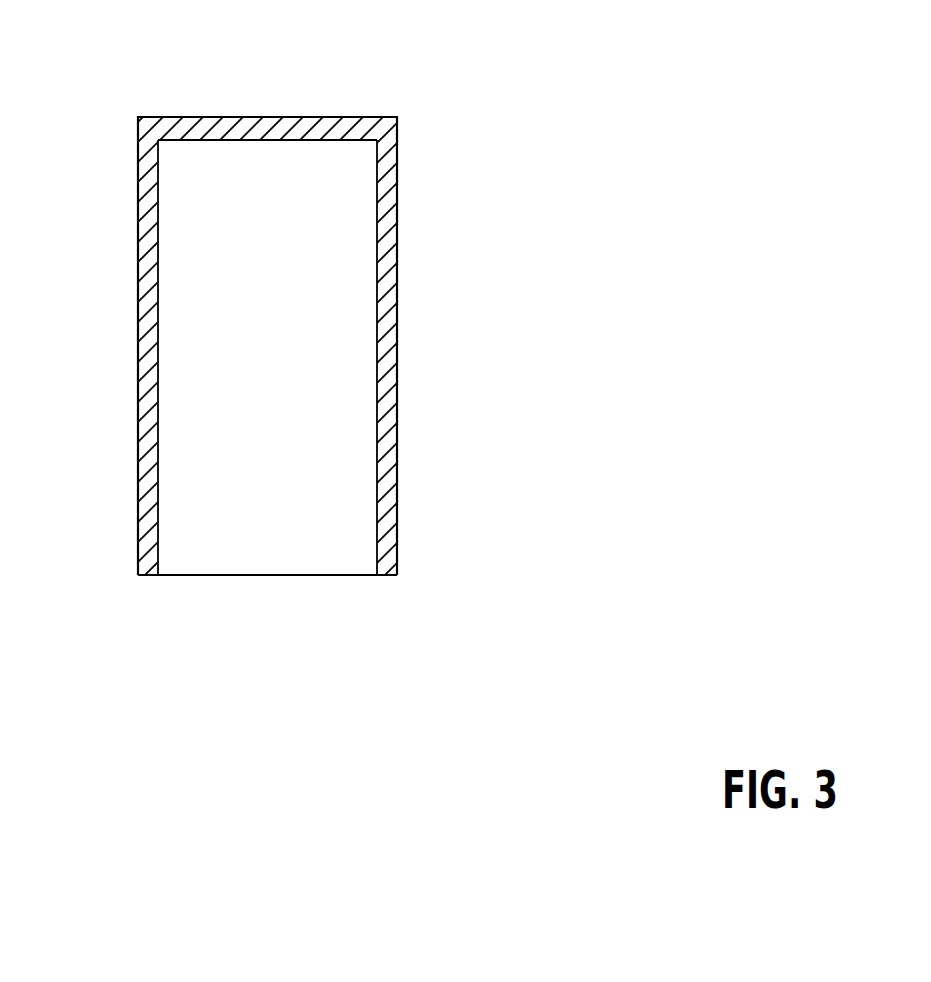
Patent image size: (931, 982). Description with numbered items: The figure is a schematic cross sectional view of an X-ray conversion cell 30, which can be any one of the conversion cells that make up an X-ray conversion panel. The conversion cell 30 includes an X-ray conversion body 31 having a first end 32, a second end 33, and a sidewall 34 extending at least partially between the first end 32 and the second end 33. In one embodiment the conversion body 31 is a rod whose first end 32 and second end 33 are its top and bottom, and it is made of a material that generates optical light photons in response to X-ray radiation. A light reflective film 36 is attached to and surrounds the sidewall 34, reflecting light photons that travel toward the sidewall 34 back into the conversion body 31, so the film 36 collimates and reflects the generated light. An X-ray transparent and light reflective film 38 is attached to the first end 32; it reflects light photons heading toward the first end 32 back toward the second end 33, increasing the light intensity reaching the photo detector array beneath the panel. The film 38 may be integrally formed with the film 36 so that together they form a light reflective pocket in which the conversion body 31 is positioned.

The X-ray conversion cell 30 is at (510, 227).
The X-ray conversion body 31 is at (278, 275).
The first end 32 is at (262, 140).
The second end 33 is at (270, 575).
The sidewall 34 is at (158, 390).
The light reflective film 36 is at (138, 307).
The X-ray transparent and light reflective film 38 is at (340, 117).